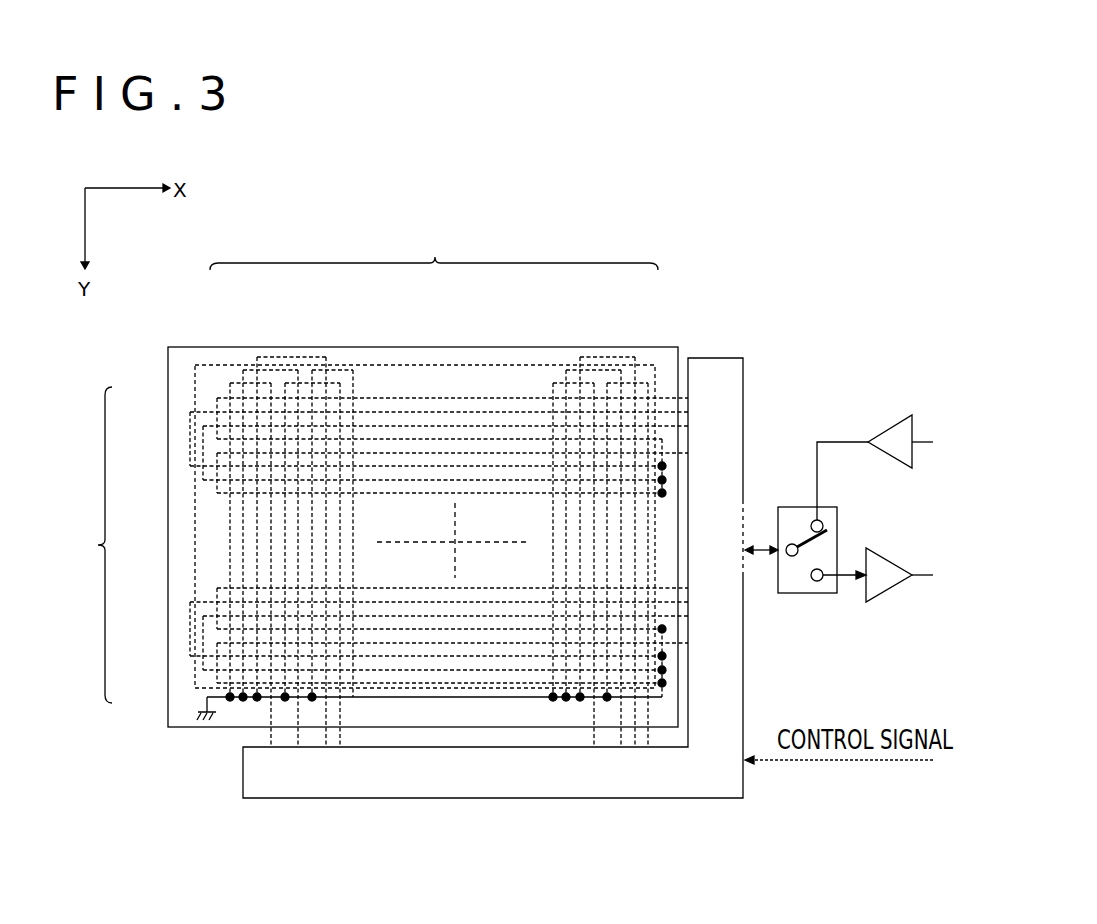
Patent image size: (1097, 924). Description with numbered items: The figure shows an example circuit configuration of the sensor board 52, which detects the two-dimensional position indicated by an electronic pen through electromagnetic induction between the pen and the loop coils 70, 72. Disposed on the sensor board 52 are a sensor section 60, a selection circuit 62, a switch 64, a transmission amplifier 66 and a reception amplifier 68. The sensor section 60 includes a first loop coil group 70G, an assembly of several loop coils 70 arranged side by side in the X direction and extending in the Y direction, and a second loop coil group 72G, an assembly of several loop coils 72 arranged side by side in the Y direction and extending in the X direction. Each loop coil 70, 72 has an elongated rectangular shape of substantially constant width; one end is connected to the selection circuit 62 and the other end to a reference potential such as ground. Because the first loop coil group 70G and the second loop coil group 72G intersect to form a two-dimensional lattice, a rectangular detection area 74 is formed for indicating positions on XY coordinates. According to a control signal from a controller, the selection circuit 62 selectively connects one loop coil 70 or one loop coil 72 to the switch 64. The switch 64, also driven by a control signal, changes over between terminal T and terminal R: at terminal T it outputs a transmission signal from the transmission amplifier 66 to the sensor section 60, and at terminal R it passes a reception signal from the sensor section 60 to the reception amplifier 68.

The sensor board 52 is at (293, 212).
The sensor section 60 is at (197, 345).
The selection circuit 62 is at (722, 357).
The switch 64 is at (800, 583).
The transmission amplifier 66 is at (897, 437).
The reception amplifier 68 is at (887, 568).
The loop coil 70 is at (641, 382).
The first loop coil group 70G is at (434, 250).
The loop coil 72 is at (216, 676).
The second loop coil group 72G is at (78, 545).
The detection area 74 is at (440, 363).